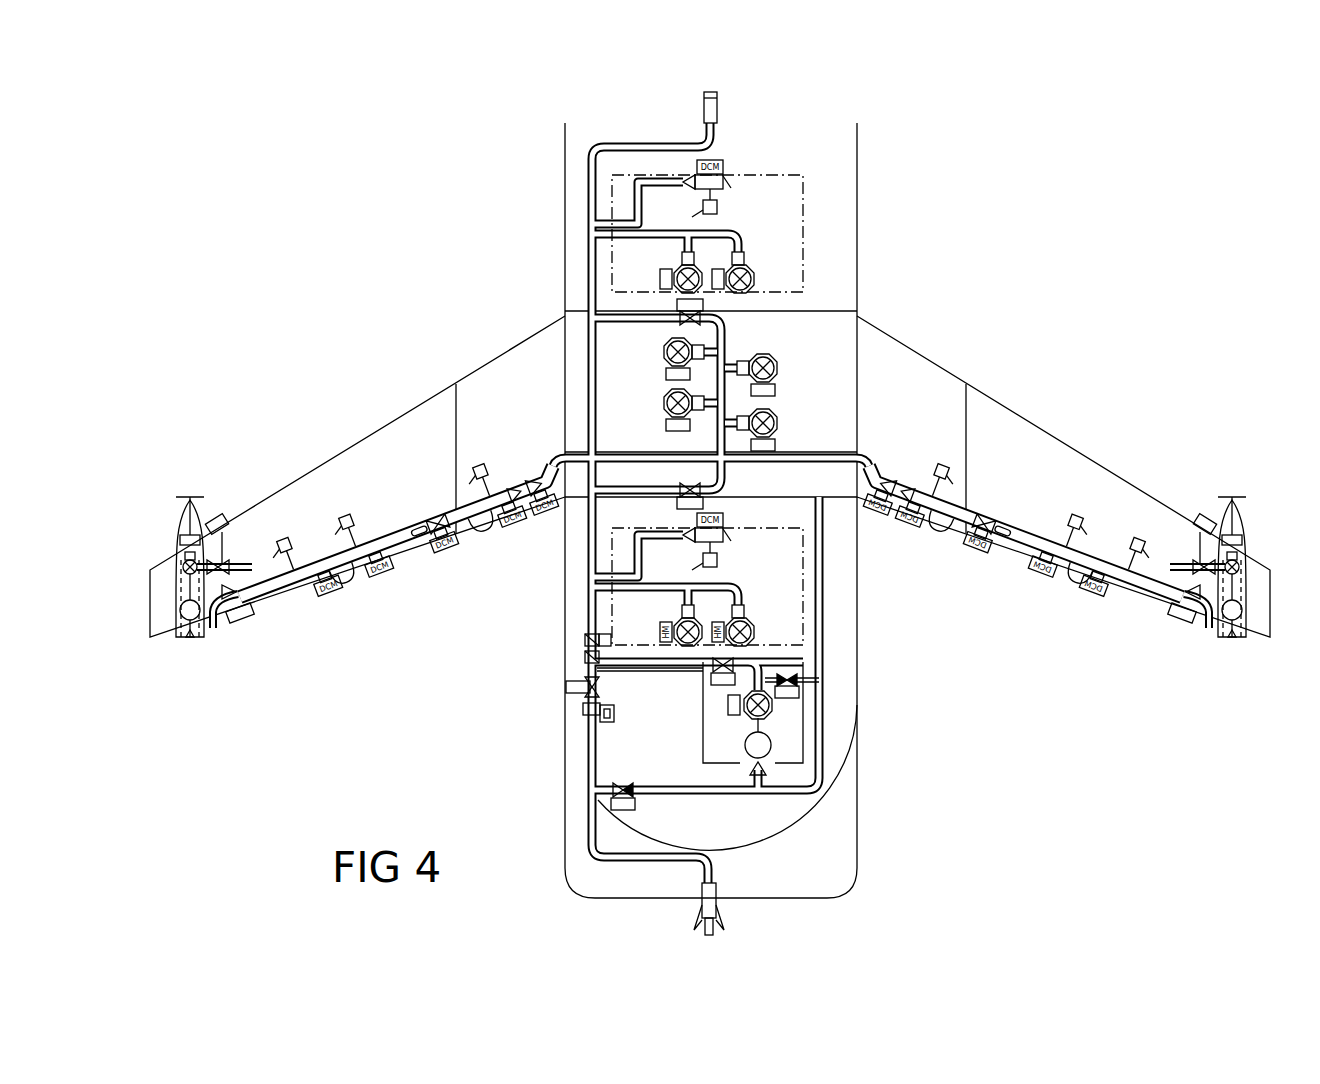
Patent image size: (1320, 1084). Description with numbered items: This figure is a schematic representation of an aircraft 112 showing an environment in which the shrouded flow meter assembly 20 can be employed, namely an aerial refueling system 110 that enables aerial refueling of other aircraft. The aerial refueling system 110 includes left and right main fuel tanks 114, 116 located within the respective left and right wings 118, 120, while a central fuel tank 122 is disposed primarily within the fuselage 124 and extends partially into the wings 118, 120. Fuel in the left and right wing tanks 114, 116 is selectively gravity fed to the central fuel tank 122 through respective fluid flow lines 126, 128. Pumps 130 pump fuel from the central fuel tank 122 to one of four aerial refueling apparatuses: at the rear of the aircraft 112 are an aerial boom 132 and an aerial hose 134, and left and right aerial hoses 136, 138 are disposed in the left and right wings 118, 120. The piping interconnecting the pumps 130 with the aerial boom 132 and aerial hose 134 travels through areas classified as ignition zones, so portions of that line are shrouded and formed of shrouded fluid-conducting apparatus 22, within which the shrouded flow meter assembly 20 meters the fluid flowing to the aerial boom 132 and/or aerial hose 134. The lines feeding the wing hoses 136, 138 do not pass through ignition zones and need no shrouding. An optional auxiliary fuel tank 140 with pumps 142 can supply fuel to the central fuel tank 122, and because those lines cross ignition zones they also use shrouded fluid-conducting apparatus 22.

The shrouded flow meter assembly 20 is at (578, 641).
The shrouded fluid-conducting apparatus 22 is at (590, 183).
The aerial refueling system 110 is at (408, 204).
The aircraft 112 is at (845, 142).
The left main fuel tank 114 is at (455, 396).
The right main fuel tank 116 is at (1100, 463).
The left wing 118 is at (320, 450).
The right wing 120 is at (1045, 403).
The central fuel tank 122 is at (835, 380).
The fuselage 124 is at (848, 284).
The fluid flow line 126 is at (450, 533).
The fluid flow line 128 is at (970, 537).
The pumps 130 is at (768, 424).
The aerial boom 132 is at (705, 896).
The aerial hose 134 is at (772, 745).
The left aerial hose 136 is at (196, 634).
The right aerial hose 138 is at (1220, 632).
The auxiliary fuel tank 140 is at (803, 215).
The pumps 142 is at (748, 264).